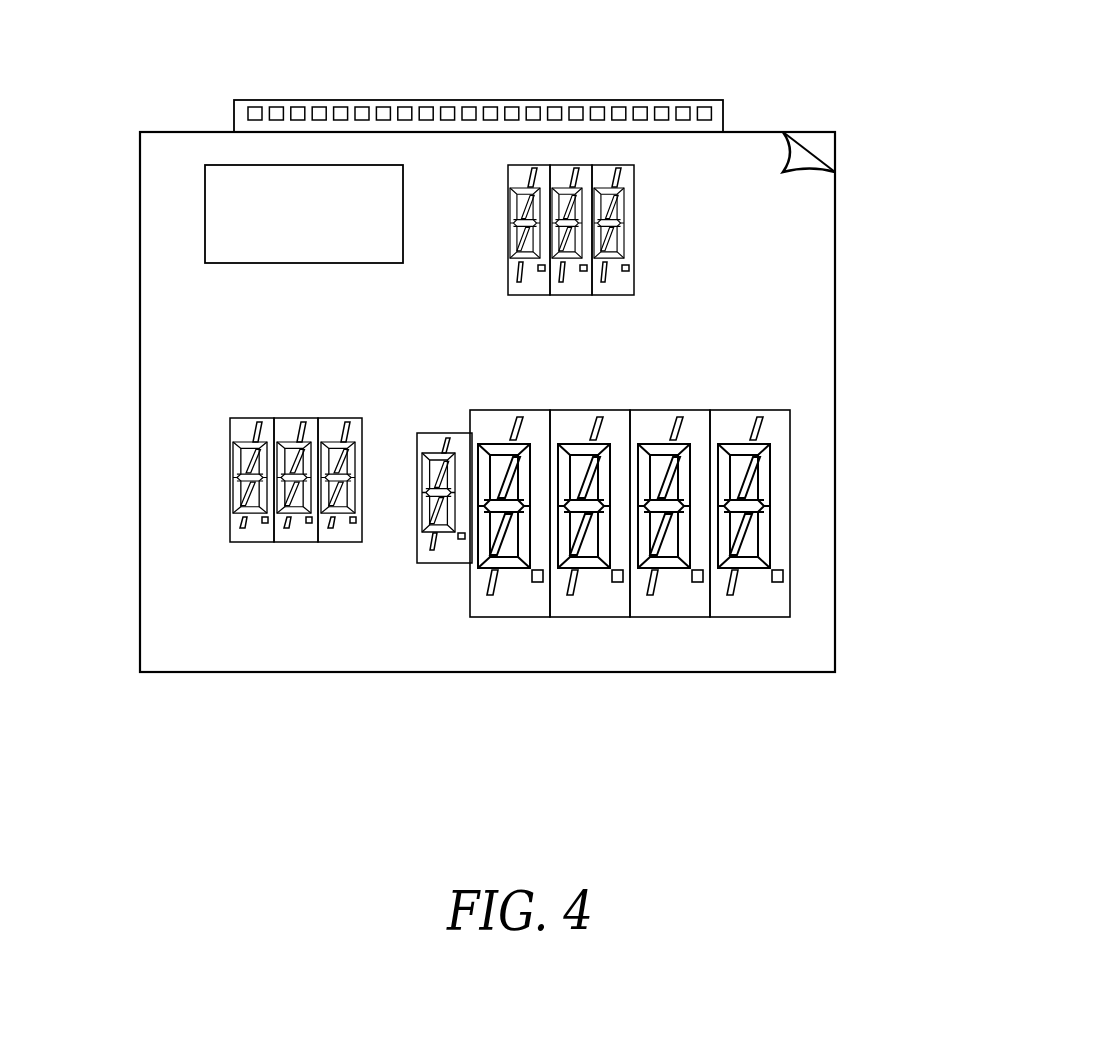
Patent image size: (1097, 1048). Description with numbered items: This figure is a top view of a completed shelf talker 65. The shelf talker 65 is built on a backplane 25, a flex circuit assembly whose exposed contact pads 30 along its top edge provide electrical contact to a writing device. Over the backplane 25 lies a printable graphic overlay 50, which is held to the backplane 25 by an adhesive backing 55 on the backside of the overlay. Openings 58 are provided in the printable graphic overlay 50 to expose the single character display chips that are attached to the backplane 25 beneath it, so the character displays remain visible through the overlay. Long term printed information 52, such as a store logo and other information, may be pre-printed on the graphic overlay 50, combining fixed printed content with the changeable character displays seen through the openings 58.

The shelf talker 65 is at (176, 98).
The exposed contact pads 30 is at (703, 100).
The adhesive backing 55 is at (805, 157).
The backplane 25 is at (835, 150).
The printable graphic overlay 50 is at (820, 292).
The long term printed information 52 is at (205, 210).
The openings 58 is at (633, 278).